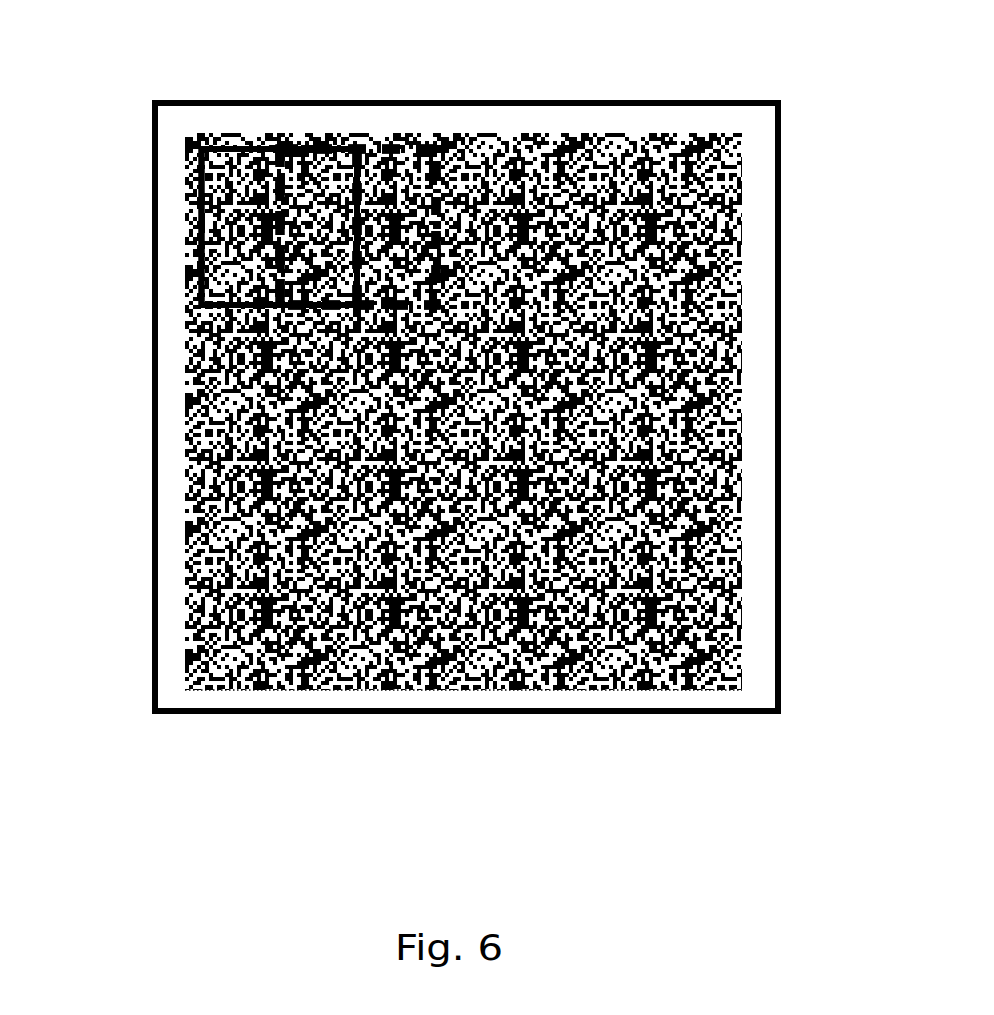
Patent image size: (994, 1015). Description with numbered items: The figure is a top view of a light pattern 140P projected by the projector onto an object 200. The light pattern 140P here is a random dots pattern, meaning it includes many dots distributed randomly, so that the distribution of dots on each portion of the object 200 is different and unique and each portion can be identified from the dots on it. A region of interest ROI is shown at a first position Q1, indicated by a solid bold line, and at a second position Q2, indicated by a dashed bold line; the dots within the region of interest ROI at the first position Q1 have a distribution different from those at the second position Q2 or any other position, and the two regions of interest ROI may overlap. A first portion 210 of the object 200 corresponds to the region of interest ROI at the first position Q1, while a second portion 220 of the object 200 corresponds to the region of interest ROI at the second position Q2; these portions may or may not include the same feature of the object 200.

The object 200 is at (170, 127).
The light pattern 140P is at (728, 249).
The region of interest ROI is at (208, 147).
The first portion 210 is at (193, 255).
The second portion 220 is at (403, 228).
The first position Q1 is at (232, 147).
The second position Q2 is at (403, 137).